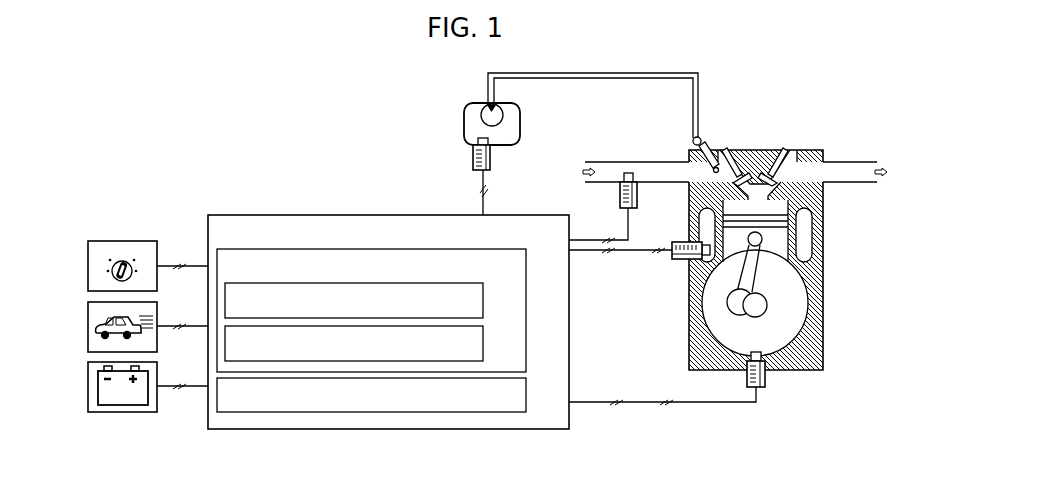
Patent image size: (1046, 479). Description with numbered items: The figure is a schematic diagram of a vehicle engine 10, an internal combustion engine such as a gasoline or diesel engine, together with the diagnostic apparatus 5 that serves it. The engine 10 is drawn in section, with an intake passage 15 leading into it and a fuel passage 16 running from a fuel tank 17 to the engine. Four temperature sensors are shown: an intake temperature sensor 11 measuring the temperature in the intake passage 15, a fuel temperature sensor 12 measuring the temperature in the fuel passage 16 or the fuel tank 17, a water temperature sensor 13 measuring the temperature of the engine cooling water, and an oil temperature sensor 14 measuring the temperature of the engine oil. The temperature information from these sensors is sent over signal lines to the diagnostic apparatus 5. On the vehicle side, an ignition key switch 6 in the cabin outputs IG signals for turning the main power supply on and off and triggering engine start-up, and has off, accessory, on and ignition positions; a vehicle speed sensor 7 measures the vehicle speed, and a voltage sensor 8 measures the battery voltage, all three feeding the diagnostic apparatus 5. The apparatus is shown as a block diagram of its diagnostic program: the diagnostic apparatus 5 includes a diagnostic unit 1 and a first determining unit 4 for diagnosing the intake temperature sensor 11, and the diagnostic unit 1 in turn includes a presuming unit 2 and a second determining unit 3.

The diagnostic unit 1 is at (527, 268).
The presuming unit 2 is at (484, 302).
The second determining unit 3 is at (484, 345).
The first determining unit 4 is at (527, 397).
The diagnostic apparatus 5 is at (408, 215).
The ignition key switch 6 is at (85, 266).
The vehicle speed sensor 7 is at (85, 326).
The voltage sensor 8 is at (85, 386).
The engine 10 is at (840, 127).
The intake temperature sensor 11 is at (618, 198).
The fuel temperature sensor 12 is at (490, 166).
The water temperature sensor 13 is at (676, 260).
The oil temperature sensor 14 is at (765, 385).
The intake passage 15 is at (657, 162).
The fuel passage 16 is at (606, 82).
The fuel tank 17 is at (520, 124).